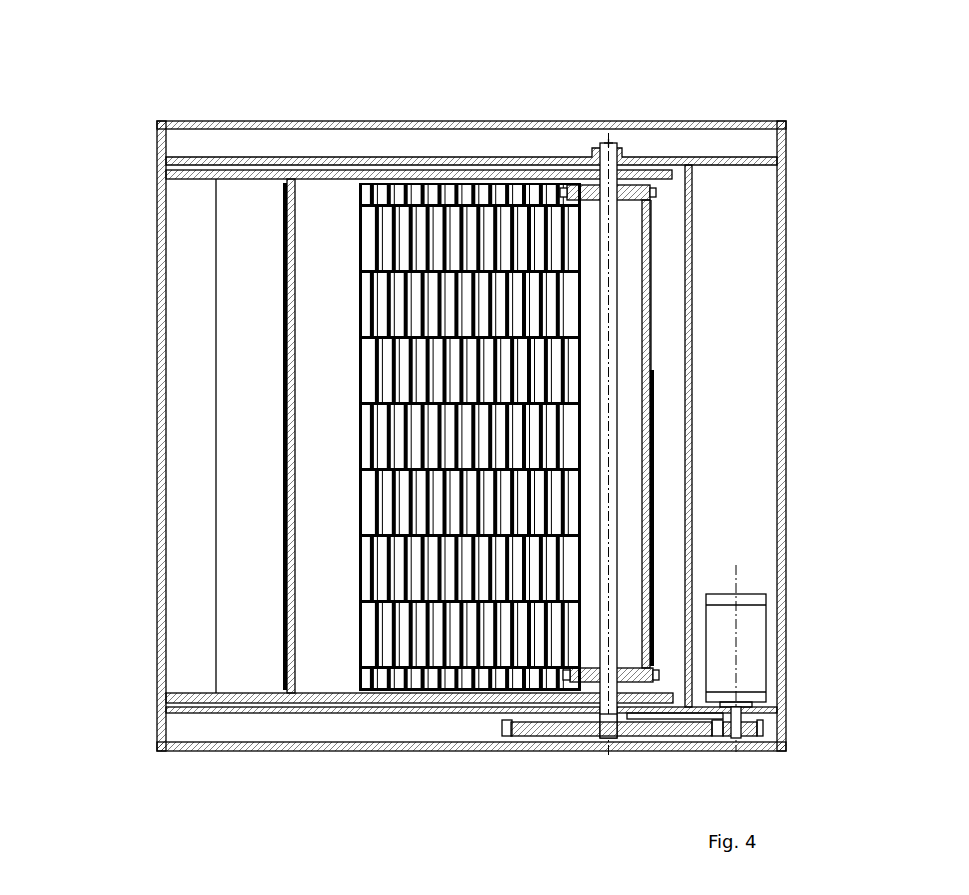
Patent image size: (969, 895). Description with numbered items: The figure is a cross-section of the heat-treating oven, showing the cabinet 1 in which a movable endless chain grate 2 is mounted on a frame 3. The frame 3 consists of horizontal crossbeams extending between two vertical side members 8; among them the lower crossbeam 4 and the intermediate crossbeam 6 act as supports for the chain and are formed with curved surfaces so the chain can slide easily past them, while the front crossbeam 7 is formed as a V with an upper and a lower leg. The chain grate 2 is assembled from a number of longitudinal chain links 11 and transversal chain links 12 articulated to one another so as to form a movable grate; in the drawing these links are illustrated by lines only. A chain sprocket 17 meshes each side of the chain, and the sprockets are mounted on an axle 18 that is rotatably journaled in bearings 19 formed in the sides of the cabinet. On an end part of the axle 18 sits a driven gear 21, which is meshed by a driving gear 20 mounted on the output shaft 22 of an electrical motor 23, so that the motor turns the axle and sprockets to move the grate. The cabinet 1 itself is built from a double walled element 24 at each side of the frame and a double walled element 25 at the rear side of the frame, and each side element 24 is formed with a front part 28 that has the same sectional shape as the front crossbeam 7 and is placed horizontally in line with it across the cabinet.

The cabinet 1 is at (492, 104).
The endless chain grate 2 is at (437, 514).
The frame 3 is at (104, 388).
The crossbeam 4 is at (305, 468).
The crossbeam 6 is at (633, 487).
The crossbeam 7 is at (178, 452).
The side member 8 is at (186, 694).
The longitudinal chain link 11 is at (395, 460).
The transversal chain link 12 is at (370, 366).
The chain sprocket 17 is at (654, 212).
The axle 18 is at (613, 362).
The bearing 19 is at (621, 146).
The driving gear 20 is at (706, 736).
The driven gear 21 is at (518, 725).
The output shaft 22 is at (738, 740).
The electrical motor 23 is at (752, 630).
The double walled element 24 is at (294, 142).
The double walled element 25 is at (773, 418).
The front part 28 is at (163, 731).